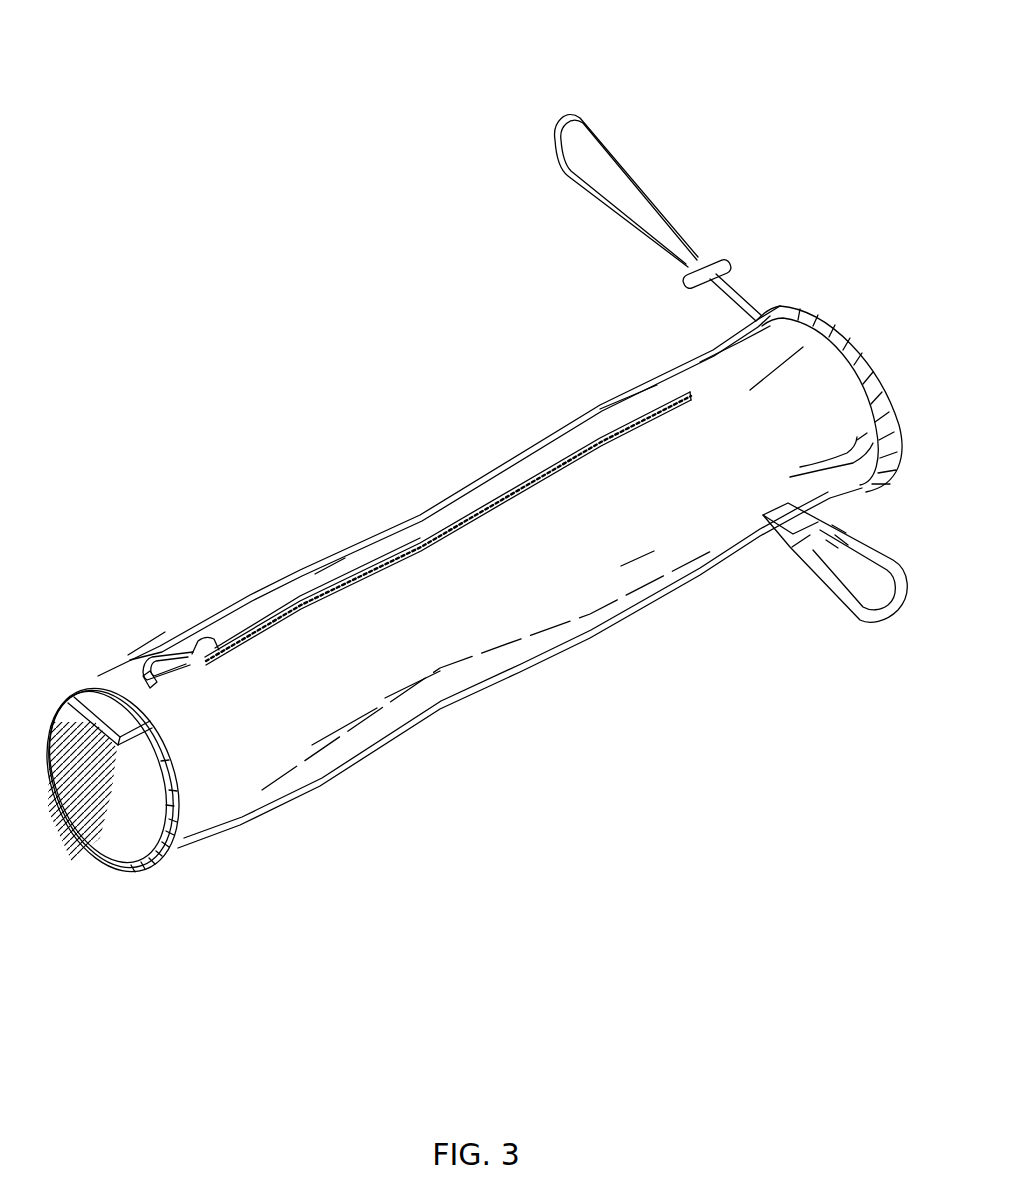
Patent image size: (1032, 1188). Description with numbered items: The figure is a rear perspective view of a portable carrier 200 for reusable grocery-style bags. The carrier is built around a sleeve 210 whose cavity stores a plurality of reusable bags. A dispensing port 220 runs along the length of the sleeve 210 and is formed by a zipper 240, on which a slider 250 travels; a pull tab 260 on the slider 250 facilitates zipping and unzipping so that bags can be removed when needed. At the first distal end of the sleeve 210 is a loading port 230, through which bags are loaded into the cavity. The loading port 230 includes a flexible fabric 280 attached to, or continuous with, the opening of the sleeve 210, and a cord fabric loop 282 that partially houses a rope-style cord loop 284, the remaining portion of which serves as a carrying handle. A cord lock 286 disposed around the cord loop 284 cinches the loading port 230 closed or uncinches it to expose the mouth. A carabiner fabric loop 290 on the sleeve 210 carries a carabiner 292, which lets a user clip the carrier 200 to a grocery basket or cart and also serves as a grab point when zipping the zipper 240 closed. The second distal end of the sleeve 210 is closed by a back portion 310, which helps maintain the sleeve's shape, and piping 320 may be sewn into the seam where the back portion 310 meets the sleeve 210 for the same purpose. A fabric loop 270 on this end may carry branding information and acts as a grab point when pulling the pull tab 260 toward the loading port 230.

The portable carrier 200 is at (372, 297).
The sleeve 210 is at (418, 662).
The dispensing port 220 is at (503, 532).
The loading port 230 is at (671, 346).
The zipper 240 is at (259, 617).
The slider 250 is at (147, 676).
The pull tab 260 is at (201, 643).
The fabric loop 270 is at (105, 720).
The flexible fabric 280 is at (778, 410).
The cord fabric loop 282 is at (781, 307).
The cord loop 284 is at (578, 118).
The cord lock 286 is at (703, 265).
The carabiner fabric loop 290 is at (790, 522).
The carabiner 292 is at (882, 612).
The back portion 310 is at (112, 813).
The piping 320 is at (170, 790).